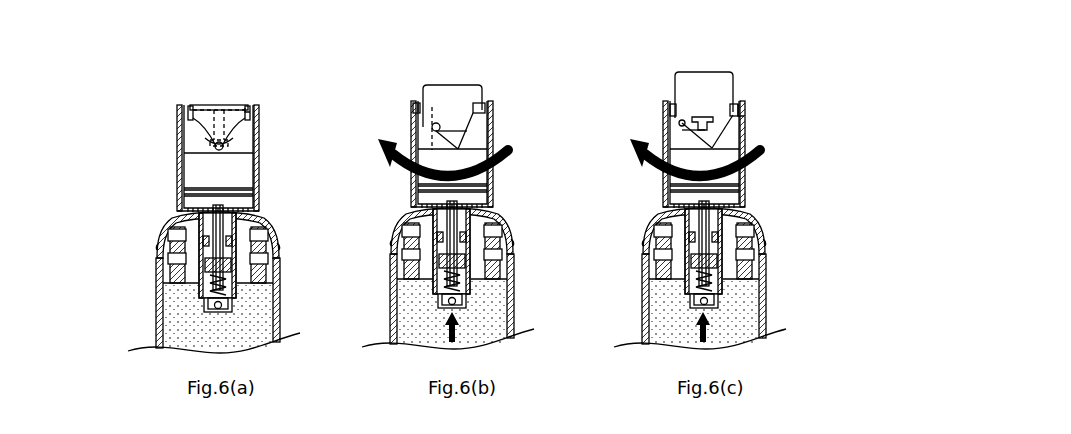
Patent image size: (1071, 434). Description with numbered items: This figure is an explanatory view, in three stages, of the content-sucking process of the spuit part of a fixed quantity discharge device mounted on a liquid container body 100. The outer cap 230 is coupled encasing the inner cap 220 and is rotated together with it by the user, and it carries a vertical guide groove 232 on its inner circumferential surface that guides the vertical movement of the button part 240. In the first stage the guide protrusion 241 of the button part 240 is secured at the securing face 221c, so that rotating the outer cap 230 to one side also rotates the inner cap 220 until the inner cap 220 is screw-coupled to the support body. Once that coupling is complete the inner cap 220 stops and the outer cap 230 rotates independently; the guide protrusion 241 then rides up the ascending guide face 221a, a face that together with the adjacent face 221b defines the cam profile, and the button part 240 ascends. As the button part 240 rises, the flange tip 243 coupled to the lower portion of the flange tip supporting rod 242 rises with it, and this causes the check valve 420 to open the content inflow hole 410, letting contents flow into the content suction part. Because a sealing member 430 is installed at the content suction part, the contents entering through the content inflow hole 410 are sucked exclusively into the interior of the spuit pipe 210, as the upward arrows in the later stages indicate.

In FIG. 6A, the container body 100 is at (162, 330).
In FIG. 6B, the container body 100 is at (512, 322).
In FIG. 6C, the container body 100 is at (763, 318).
In FIG. 6A, the spuit pipe 210 is at (224, 254).
In FIG. 6B, the spuit pipe 210 is at (464, 253).
In FIG. 6C, the spuit pipe 210 is at (717, 255).
In FIG. 6A, the inner cap 220 is at (196, 178).
In FIG. 6B, the inner cap 220 is at (480, 178).
In FIG. 6C, the inner cap 220 is at (727, 179).
In FIG. 6A, the ascending guide face 221a is at (192, 124).
In FIG. 6B, the ascending guide face 221a is at (430, 118).
In FIG. 6C, the ascending guide face 221a is at (682, 122).
In FIG. 6A, the second hinge portion 221b is at (238, 124).
In FIG. 6B, the second hinge portion 221b is at (480, 112).
In FIG. 6C, the second hinge portion 221b is at (738, 112).
In FIG. 6A, the securing face 221c is at (223, 149).
In FIG. 6B, the securing face 221c is at (460, 148).
In FIG. 6C, the securing face 221c is at (712, 148).
In FIG. 6A, the outer cap 230 is at (180, 136).
In FIG. 6B, the outer cap 230 is at (452, 154).
In FIG. 6C, the outer cap 230 is at (704, 154).
In FIG. 6A, the vertical guide groove 232 is at (249, 105).
In FIG. 6B, the vertical guide groove 232 is at (417, 97).
In FIG. 6C, the vertical guide groove 232 is at (752, 118).
In FIG. 6A, the button part 240 is at (218, 103).
In FIG. 6B, the button part 240 is at (450, 85).
In FIG. 6C, the button part 240 is at (706, 72).
In FIG. 6A, the guide protrusion 241 is at (214, 146).
In FIG. 6B, the guide protrusion 241 is at (440, 124).
In FIG. 6C, the guide protrusion 241 is at (672, 105).
In FIG. 6A, the flange tip supporting rod 242 is at (228, 224).
In FIG. 6B, the flange tip supporting rod 242 is at (486, 208).
In FIG. 6C, the flange tip supporting rod 242 is at (714, 208).
In FIG. 6A, the flange tip 243 is at (232, 246).
In FIG. 6B, the flange tip 243 is at (463, 228).
In FIG. 6C, the flange tip 243 is at (720, 244).
In FIG. 6A, the content inflow hole 410 is at (213, 308).
In FIG. 6A, the check valve 420 is at (207, 308).
In FIG. 6A, the sealing member 430 is at (208, 290).